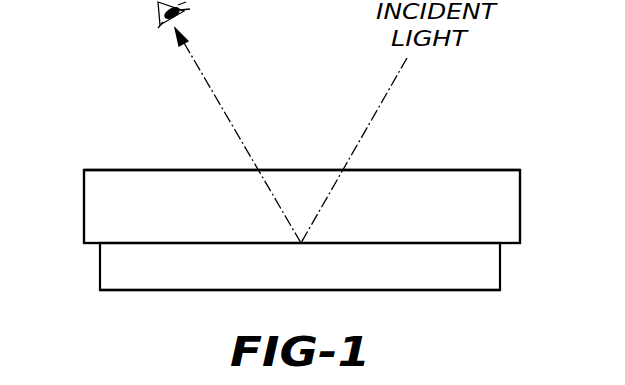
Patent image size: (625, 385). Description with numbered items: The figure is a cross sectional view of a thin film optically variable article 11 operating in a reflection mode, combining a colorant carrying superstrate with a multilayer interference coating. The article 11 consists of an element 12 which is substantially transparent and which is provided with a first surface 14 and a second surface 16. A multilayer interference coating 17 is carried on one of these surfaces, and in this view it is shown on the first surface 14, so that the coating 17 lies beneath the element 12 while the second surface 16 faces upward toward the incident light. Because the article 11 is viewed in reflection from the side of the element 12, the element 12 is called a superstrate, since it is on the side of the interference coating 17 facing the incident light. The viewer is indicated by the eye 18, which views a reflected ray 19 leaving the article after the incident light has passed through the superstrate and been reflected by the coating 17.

The thin film optically variable article 11 is at (78, 147).
The element 12 is at (88, 196).
The first surface 14 is at (505, 244).
The second surface 16 is at (447, 170).
The multilayer interference coating 17 is at (483, 283).
The eye 18 is at (150, 11).
The reflected ray 19 is at (228, 118).